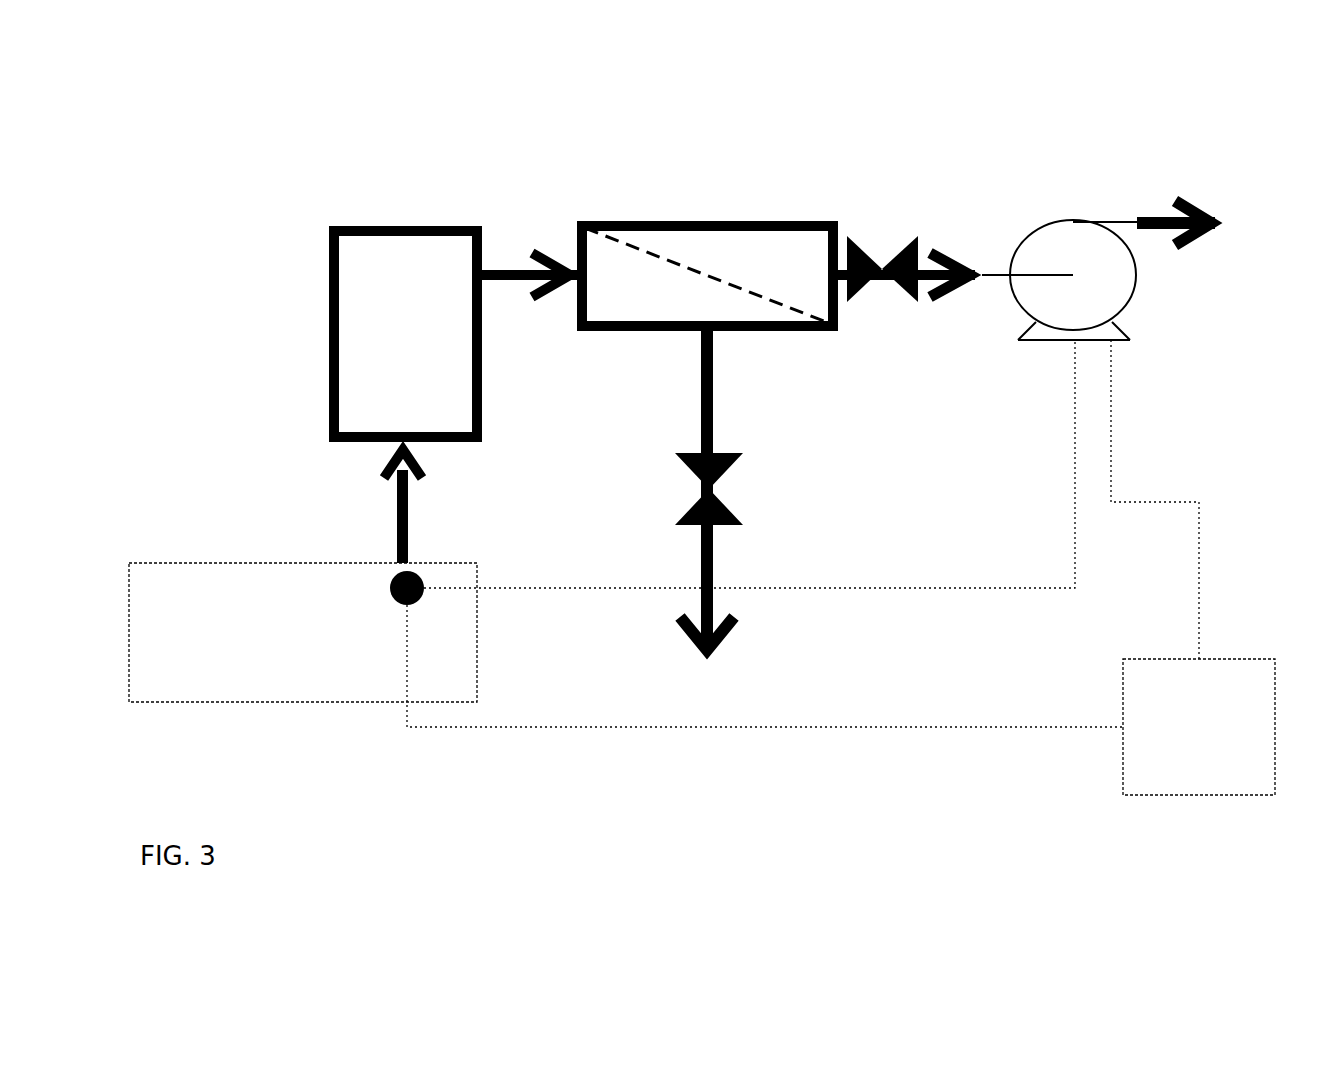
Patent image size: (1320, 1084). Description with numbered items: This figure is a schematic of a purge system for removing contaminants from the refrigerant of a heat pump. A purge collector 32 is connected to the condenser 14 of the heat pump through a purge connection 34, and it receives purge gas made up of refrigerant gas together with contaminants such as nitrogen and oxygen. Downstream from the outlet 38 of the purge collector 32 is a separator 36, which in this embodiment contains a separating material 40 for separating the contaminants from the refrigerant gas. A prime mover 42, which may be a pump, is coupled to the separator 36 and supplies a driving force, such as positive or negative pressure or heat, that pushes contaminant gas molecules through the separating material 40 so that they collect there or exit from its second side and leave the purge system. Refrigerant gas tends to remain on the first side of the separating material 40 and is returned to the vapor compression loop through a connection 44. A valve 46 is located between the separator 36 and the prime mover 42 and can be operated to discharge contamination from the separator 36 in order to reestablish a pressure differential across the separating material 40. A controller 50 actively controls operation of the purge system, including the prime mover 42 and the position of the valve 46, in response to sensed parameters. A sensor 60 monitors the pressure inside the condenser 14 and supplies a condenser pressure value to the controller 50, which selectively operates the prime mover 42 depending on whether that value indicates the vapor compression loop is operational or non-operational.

The condenser 14 is at (303, 632).
The purge collector 32 is at (330, 280).
The purge connection 34 is at (400, 512).
The separator 36 is at (727, 220).
The outlet 38 is at (483, 262).
The separating material 40 is at (653, 250).
The prime mover 42 is at (1110, 283).
The connection 44 is at (711, 385).
The valve 46 is at (873, 255).
The controller 50 is at (1199, 727).
The sensor 60 is at (395, 578).